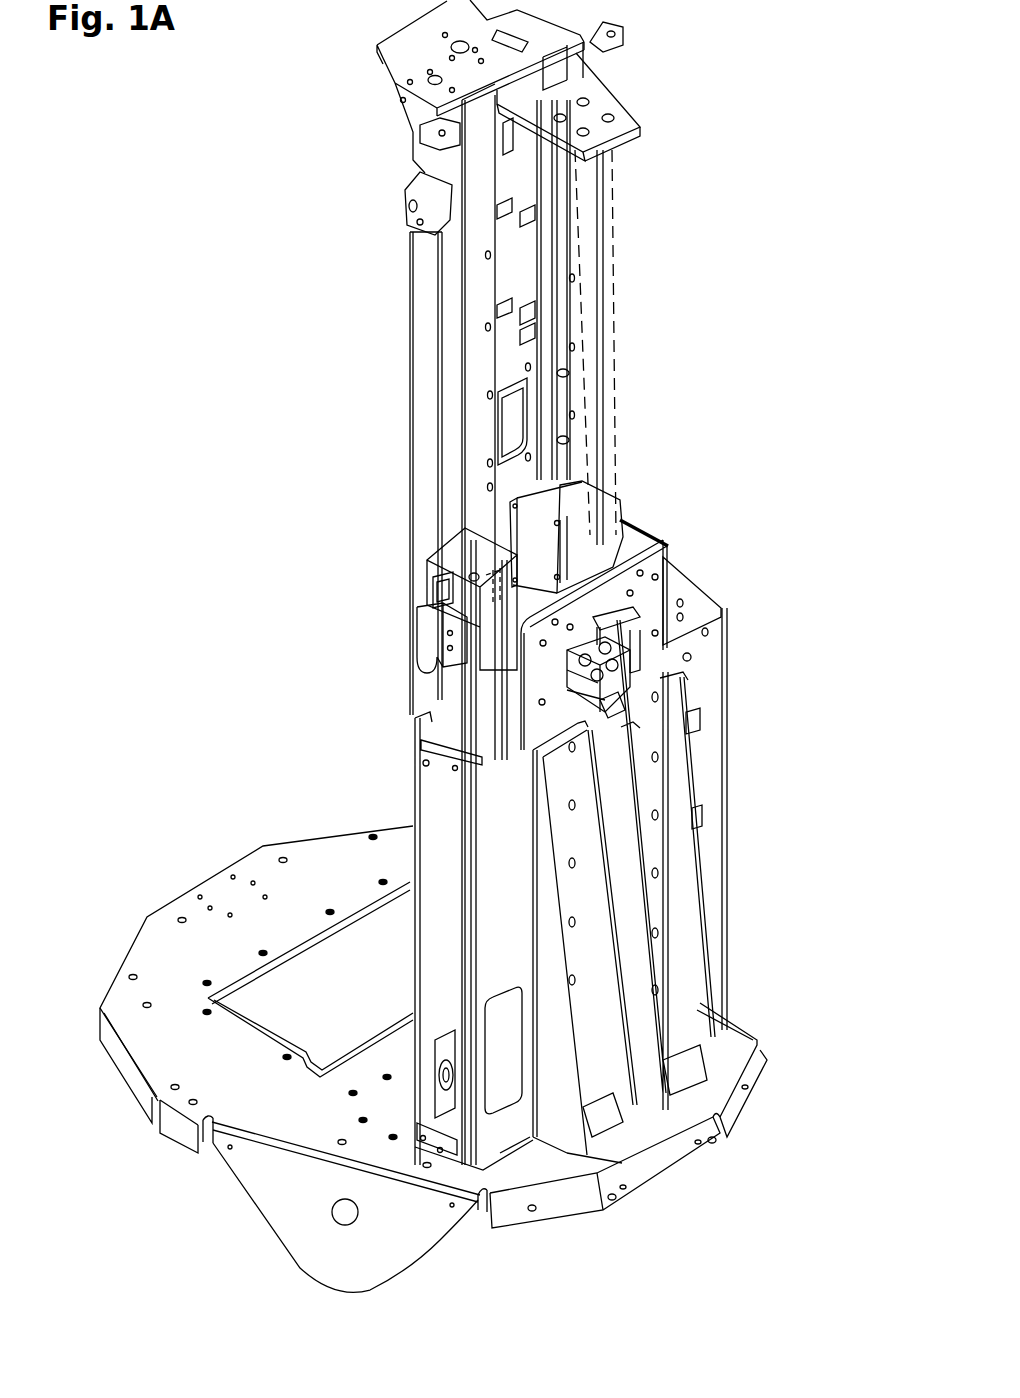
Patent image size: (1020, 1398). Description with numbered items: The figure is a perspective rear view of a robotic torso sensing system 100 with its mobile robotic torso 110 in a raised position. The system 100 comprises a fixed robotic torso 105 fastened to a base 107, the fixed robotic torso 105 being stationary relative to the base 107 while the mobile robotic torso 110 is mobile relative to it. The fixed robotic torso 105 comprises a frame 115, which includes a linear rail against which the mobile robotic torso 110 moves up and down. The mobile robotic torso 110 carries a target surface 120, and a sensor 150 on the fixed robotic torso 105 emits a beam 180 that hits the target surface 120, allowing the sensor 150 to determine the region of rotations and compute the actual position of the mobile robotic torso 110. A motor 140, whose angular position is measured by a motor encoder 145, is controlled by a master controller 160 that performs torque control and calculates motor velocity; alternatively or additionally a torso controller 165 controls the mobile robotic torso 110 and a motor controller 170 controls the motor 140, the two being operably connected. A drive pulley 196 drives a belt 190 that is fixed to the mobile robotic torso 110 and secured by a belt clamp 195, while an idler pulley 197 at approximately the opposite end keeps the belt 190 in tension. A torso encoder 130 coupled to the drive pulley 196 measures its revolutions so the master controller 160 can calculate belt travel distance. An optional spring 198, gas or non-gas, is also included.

The robotic torso sensing system 100 is at (197, 184).
The fixed robotic torso 105 is at (824, 1101).
The base 107 is at (236, 1066).
The mobile robotic torso 110 is at (299, 2).
The frame 115 is at (713, 837).
The target surface 120 is at (615, 85).
The torso encoder 130 is at (430, 593).
The motor 140 is at (527, 540).
The motor encoder 145 is at (620, 505).
The sensor 150 is at (630, 600).
The master controller 160 is at (630, 665).
The torso controller 165 is at (635, 654).
The motor controller 170 is at (470, 770).
The beam 180 is at (612, 270).
The belt 190 is at (487, 700).
The belt clamp 195 is at (416, 645).
The drive pulley 196 is at (424, 566).
The idler pulley 197 is at (443, 1078).
The spring 198 is at (425, 356).